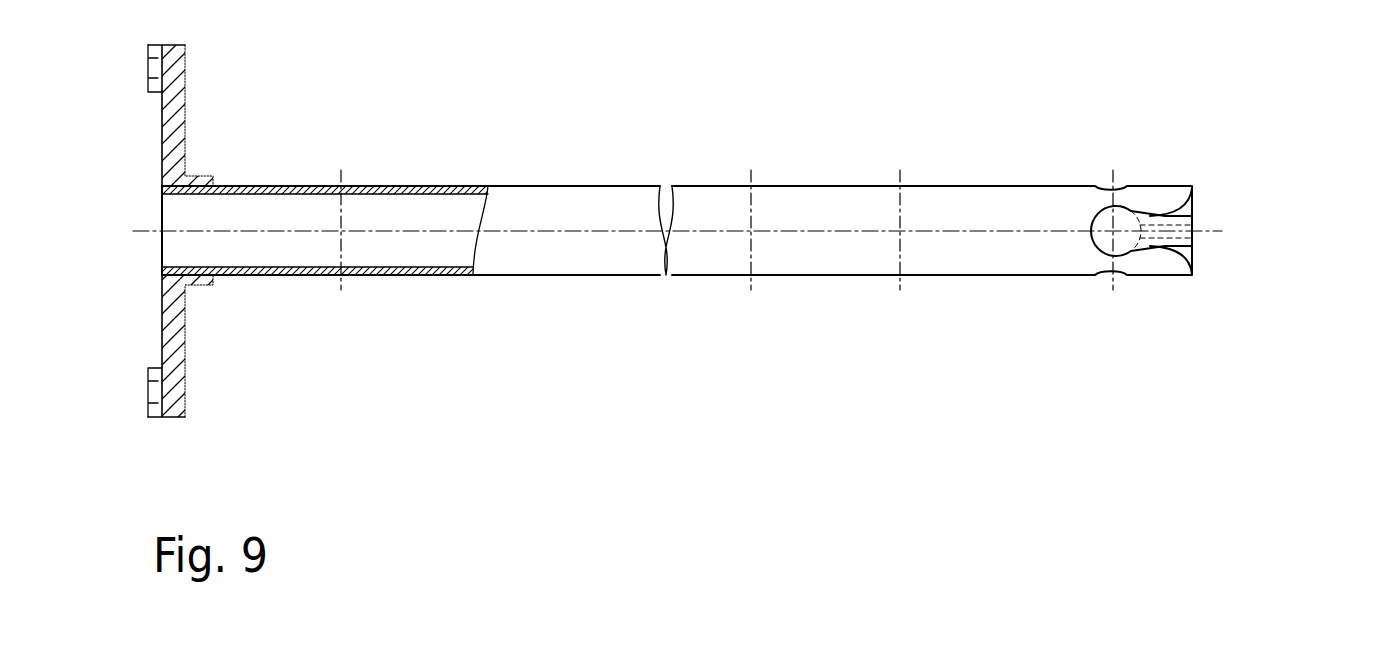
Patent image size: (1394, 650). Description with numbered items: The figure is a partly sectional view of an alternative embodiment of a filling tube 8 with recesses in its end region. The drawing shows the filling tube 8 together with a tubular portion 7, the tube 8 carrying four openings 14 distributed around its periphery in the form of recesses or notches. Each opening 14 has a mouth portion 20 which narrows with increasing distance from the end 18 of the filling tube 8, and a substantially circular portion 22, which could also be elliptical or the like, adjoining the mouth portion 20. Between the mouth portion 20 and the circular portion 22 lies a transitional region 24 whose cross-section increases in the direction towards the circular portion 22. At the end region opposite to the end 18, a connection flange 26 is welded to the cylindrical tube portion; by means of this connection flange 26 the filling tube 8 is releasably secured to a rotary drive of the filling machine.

The shaft 7 is at (568, 225).
The filling tube 8 is at (727, 172).
The openings 14 is at (1148, 215).
The end 18 is at (1195, 194).
The mouth portion 20 is at (1195, 237).
The circular portion 22 is at (1097, 213).
The transitional region 24 is at (1195, 270).
The connection flange 26 is at (175, 100).